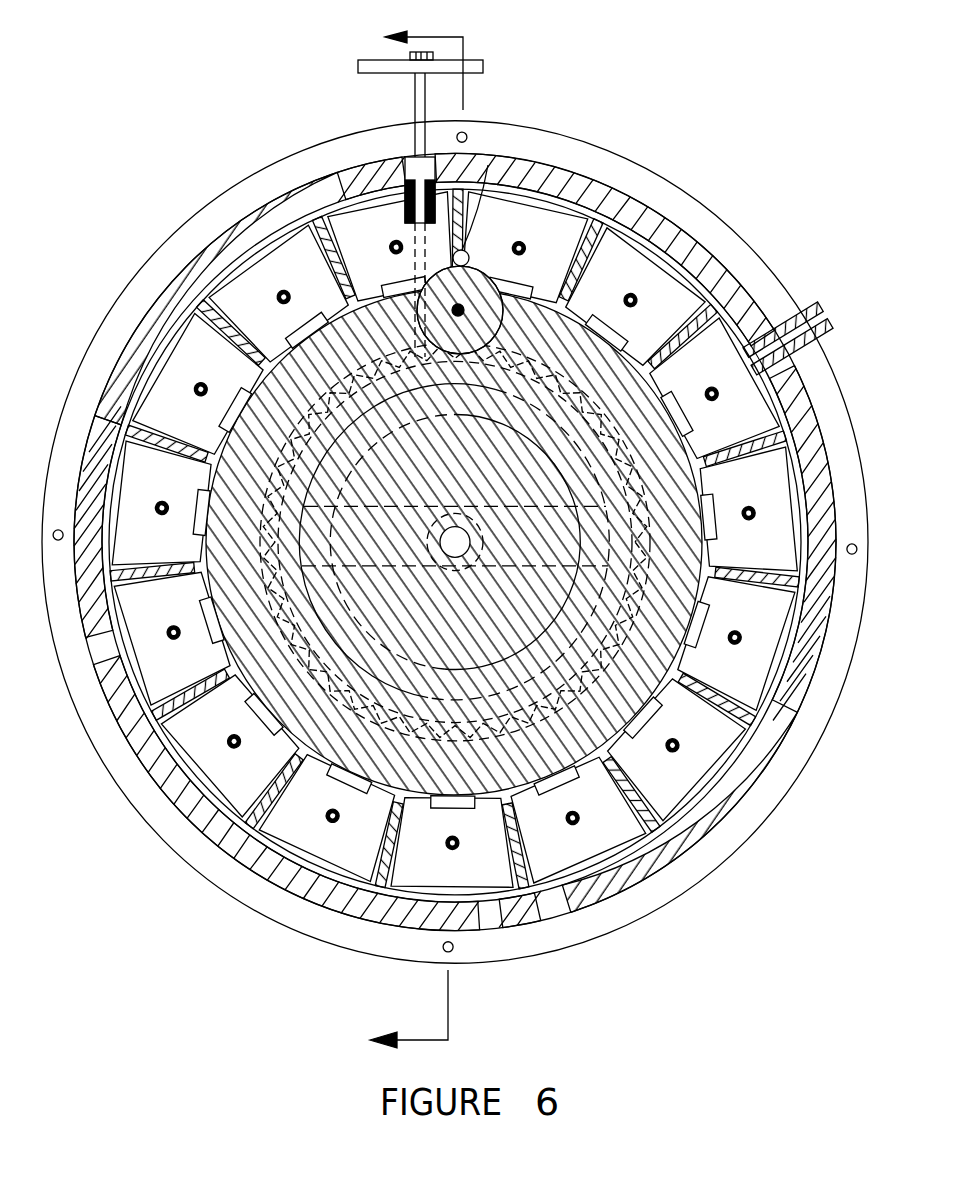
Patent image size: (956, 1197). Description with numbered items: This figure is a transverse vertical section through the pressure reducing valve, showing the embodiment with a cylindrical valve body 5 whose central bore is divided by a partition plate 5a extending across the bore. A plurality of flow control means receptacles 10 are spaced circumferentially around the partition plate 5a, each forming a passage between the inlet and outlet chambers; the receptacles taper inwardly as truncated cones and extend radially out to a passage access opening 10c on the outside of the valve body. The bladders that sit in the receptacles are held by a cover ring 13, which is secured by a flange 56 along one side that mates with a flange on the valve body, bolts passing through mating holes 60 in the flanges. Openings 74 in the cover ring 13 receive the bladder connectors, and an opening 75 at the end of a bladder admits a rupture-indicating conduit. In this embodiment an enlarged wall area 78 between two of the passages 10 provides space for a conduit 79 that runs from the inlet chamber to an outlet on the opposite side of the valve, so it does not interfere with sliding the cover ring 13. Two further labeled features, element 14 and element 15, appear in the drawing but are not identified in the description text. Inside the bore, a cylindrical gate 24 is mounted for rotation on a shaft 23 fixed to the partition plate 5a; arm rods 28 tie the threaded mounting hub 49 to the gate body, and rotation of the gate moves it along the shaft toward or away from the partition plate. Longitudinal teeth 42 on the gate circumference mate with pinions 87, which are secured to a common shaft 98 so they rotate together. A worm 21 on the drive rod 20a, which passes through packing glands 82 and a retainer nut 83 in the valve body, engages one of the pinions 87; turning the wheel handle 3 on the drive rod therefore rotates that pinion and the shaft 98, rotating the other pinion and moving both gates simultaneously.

The flange 56 is at (288, 177).
The conduit 79 is at (548, 153).
The mating holes 60 is at (464, 130).
The enlarged wall area 78 is at (488, 165).
The cover ring 13 is at (630, 880).
The tapered wedge 14 is at (697, 810).
The passage access opening 10c is at (243, 260).
The openings 74 is at (100, 654).
The opening 75 is at (562, 925).
The arm rods 28 is at (393, 550).
The partition plate 5a is at (455, 542).
The cylindrical gate 24 is at (447, 413).
The longitudinally extending teeth 42 is at (432, 425).
The shaft 23 is at (470, 524).
The mounting hub 49 is at (468, 522).
The packing glands 82 is at (400, 238).
The pole piece 15 is at (672, 752).
The flow control means receptacles 10 is at (392, 807).
The wheel handle 3 is at (432, 74).
The drive rod 20a is at (418, 113).
The retainer nut 83 is at (403, 168).
The worm gear 21 is at (413, 275).
The pinions 87 is at (468, 272).
The shaft 98 is at (462, 306).
The valve body 5 is at (401, 538).